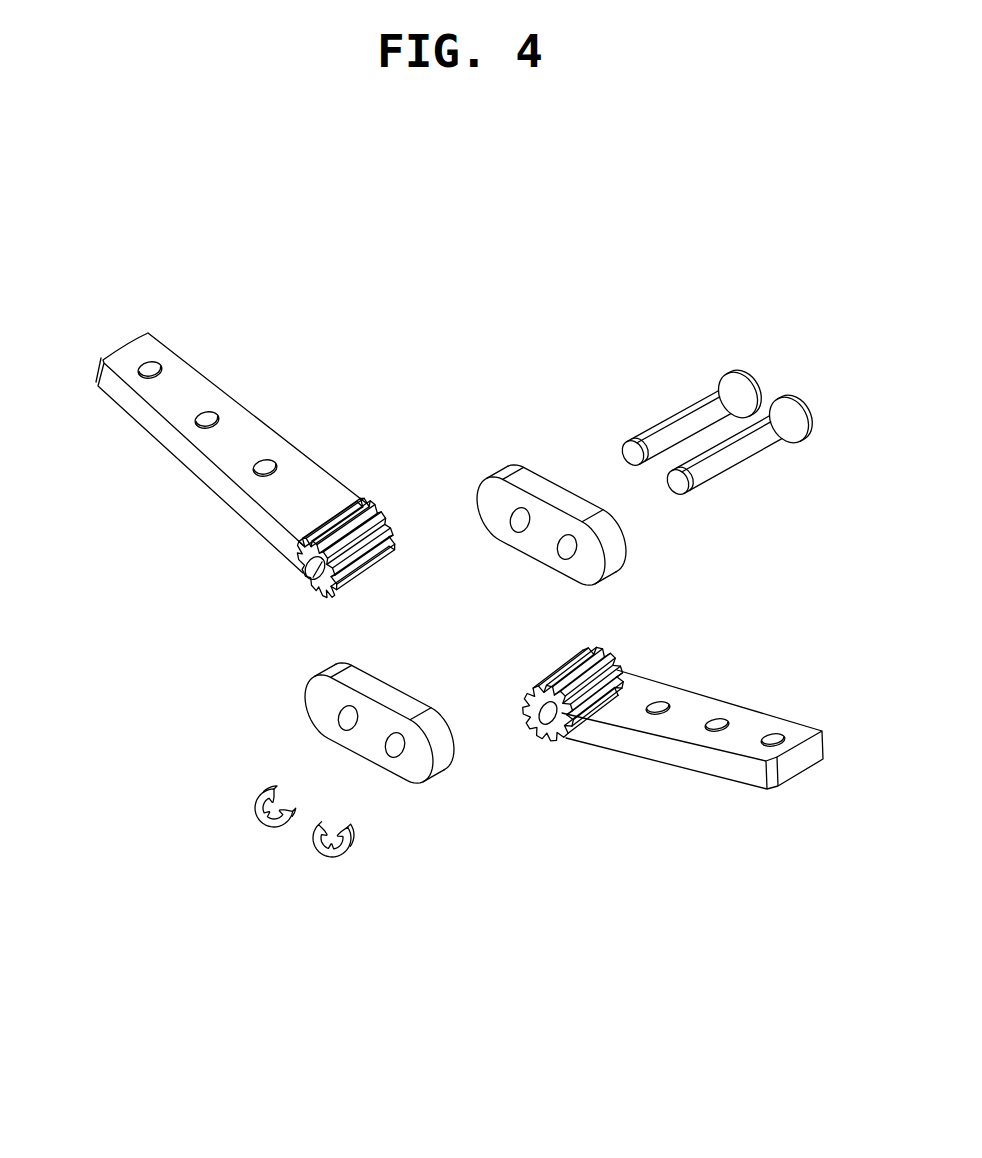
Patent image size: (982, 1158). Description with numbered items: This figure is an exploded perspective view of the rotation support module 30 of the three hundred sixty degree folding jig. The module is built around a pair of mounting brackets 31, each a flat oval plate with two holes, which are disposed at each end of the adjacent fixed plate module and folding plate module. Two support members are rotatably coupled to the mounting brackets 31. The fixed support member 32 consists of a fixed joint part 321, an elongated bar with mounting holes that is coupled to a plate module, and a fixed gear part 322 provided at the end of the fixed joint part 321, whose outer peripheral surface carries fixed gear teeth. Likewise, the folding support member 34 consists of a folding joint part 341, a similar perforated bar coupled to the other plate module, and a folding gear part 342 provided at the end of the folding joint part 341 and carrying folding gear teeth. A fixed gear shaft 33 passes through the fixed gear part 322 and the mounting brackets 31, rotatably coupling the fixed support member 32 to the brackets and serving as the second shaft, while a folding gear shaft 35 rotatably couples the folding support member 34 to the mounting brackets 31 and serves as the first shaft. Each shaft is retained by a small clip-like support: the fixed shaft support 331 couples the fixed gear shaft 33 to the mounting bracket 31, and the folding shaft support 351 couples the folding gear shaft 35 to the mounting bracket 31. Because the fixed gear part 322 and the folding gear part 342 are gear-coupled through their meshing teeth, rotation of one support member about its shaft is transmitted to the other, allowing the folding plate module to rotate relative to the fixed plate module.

The rotation support module 30 is at (528, 255).
The mounting bracket 31 is at (557, 568).
The fixed support member 32 is at (673, 765).
The fixed joint part 321 is at (620, 740).
The fixed gear part 322 is at (618, 836).
The fixed gear shaft 33 is at (727, 463).
The fixed shaft support 331 is at (337, 858).
The folding support member 34 is at (258, 461).
The folding joint part 341 is at (293, 478).
The folding gear part 342 is at (387, 522).
The folding gear shaft 35 is at (678, 418).
The folding shaft support 351 is at (273, 793).